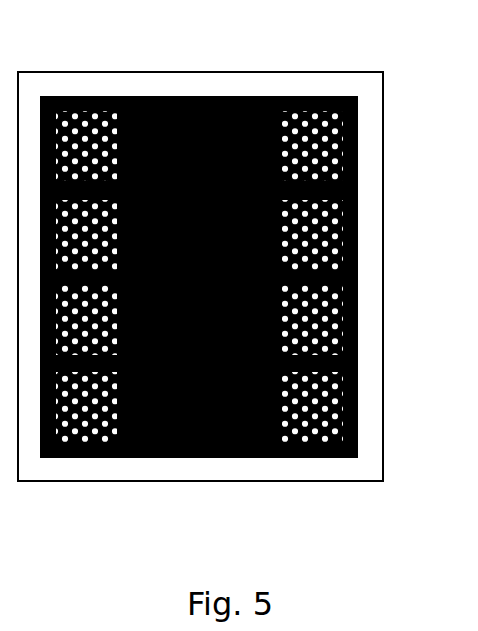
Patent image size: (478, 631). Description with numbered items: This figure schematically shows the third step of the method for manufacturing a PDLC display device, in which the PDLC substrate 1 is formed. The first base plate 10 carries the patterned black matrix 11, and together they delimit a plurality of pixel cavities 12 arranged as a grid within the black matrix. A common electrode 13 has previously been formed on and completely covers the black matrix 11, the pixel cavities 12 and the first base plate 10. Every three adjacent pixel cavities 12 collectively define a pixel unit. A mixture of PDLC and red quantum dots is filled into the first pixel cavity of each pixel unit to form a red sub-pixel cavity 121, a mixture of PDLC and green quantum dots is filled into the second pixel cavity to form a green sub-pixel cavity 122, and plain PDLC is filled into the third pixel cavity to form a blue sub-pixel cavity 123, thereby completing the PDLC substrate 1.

The PDLC substrate 1 is at (231, 283).
The first base plate 10 is at (331, 470).
The black matrix 11 is at (317, 97).
The pixel cavities 12 is at (358, 148).
The common electrode 13 is at (267, 97).
The red sub-pixel cavity 121 is at (76, 97).
The green sub-pixel cavity 122 is at (152, 97).
The blue sub-pixel cavity 123 is at (218, 97).